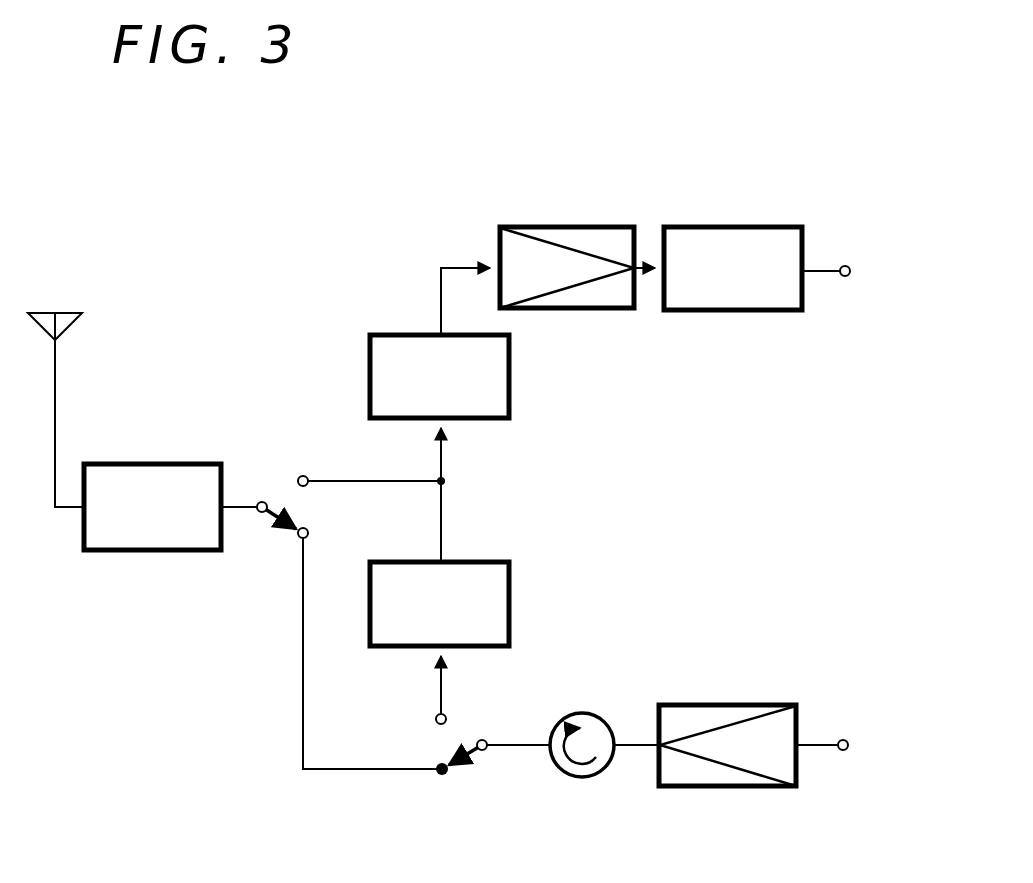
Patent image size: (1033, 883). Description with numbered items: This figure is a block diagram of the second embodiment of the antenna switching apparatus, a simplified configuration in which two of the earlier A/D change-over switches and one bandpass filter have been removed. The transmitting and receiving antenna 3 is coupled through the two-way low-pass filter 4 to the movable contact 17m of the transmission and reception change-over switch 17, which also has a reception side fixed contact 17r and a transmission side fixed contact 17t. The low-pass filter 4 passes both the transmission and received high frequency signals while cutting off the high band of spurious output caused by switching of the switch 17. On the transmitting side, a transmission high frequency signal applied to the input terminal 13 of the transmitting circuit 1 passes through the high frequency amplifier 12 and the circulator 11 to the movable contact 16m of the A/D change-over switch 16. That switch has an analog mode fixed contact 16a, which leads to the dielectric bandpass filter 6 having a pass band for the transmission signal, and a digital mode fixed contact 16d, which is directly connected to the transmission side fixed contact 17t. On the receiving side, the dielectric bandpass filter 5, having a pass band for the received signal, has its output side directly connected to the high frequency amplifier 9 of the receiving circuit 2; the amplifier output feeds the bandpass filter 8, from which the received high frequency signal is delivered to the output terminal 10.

The transmitting circuit 1 is at (578, 674).
The receiving circuit 2 is at (582, 377).
The transmitting and receiving antenna 3 is at (74, 313).
The two-way low-pass filter 4 is at (152, 462).
The dielectric bandpass filter 5 is at (483, 421).
The dielectric bandpass filter 6 is at (481, 560).
The bandpass filter 8 is at (735, 225).
The high frequency amplifier 9 is at (573, 225).
The output terminal 10 is at (848, 264).
The circulator 11 is at (580, 778).
The high frequency amplifier 12 is at (727, 790).
The input terminal 13 is at (841, 751).
The analog-mode/digital-mode change-over switch 16 is at (450, 745).
The analog mode fixed contact 16a is at (436, 714).
The movable contact 16m is at (485, 740).
The digital mode fixed contact 16d is at (437, 776).
The transmission and reception change-over switch 17 is at (333, 587).
The reception side fixed contact 17r is at (307, 477).
The transmission side fixed contact 17t is at (309, 532).
The movable contact 17m is at (259, 513).